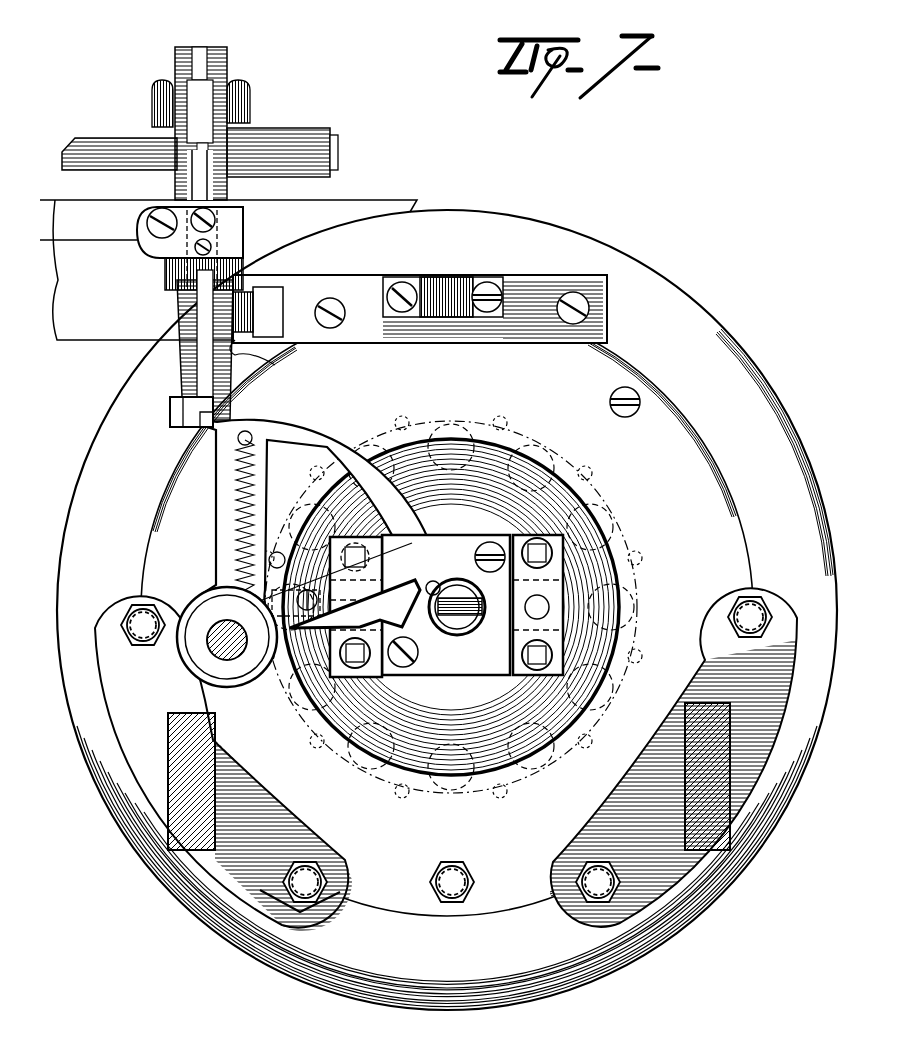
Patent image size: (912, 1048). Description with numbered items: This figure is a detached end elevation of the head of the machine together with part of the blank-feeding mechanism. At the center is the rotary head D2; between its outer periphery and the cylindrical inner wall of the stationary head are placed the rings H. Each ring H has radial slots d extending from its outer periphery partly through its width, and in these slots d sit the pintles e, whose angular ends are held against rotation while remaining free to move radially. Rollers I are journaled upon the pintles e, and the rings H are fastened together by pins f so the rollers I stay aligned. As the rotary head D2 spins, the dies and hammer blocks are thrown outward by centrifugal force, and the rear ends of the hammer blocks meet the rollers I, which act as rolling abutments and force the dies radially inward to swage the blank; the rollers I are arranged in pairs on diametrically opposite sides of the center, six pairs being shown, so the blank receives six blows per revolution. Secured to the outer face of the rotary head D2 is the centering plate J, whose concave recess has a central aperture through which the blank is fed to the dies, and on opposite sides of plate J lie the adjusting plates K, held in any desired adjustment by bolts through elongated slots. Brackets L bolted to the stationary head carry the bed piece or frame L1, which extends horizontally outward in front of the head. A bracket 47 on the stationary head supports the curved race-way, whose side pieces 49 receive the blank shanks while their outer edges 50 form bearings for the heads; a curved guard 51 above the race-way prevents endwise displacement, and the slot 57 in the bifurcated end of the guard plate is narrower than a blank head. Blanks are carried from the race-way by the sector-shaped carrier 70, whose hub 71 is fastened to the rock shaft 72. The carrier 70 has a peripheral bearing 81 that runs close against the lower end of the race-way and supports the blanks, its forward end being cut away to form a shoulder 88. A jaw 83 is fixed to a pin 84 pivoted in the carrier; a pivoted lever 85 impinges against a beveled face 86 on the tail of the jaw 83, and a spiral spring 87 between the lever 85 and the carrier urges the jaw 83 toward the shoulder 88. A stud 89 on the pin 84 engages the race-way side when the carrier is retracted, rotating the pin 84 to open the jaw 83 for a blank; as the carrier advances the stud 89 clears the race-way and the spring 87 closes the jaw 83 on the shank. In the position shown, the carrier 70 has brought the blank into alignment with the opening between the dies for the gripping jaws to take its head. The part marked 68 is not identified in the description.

The slot 57 is at (200, 111).
The slide 68 is at (197, 152).
The side pieces 49 is at (240, 278).
The bracket 47 is at (262, 308).
The outer edges 50 is at (187, 348).
The curved guard 51 is at (200, 317).
The peripheral bearing 81 is at (361, 450).
The sector shaped carrier 70 is at (313, 519).
The spiral spring 87 is at (258, 478).
The hub 71 is at (227, 637).
The rock shaft 72 is at (227, 645).
The beveled face 86 is at (355, 596).
The pivoted lever 85 is at (337, 579).
The shoulder 88 is at (445, 583).
The stud 89 is at (462, 601).
The pin 84 is at (457, 609).
The jaw 83 is at (389, 690).
The centering plate J is at (446, 606).
The adjusting plates K is at (444, 697).
The rotary head D2 is at (451, 607).
The rings H is at (460, 607).
The brackets L is at (446, 759).
The bed piece or frame L1 is at (449, 776).
The pins f is at (398, 797).
The radial slots d is at (548, 765).
The pintles e is at (615, 688).
The rollers I is at (625, 625).